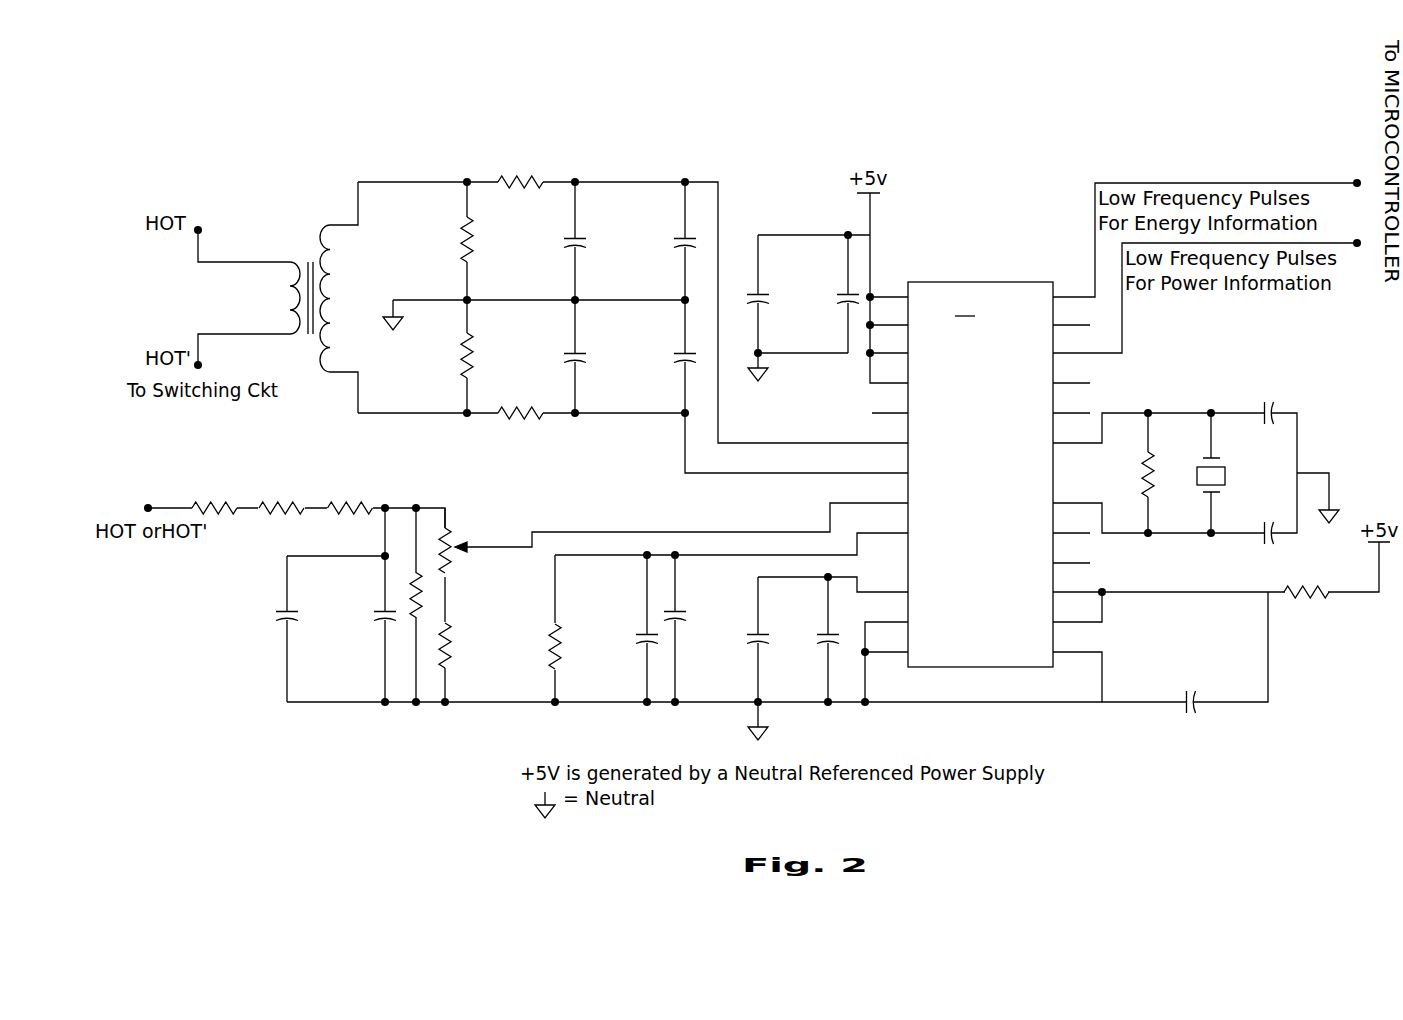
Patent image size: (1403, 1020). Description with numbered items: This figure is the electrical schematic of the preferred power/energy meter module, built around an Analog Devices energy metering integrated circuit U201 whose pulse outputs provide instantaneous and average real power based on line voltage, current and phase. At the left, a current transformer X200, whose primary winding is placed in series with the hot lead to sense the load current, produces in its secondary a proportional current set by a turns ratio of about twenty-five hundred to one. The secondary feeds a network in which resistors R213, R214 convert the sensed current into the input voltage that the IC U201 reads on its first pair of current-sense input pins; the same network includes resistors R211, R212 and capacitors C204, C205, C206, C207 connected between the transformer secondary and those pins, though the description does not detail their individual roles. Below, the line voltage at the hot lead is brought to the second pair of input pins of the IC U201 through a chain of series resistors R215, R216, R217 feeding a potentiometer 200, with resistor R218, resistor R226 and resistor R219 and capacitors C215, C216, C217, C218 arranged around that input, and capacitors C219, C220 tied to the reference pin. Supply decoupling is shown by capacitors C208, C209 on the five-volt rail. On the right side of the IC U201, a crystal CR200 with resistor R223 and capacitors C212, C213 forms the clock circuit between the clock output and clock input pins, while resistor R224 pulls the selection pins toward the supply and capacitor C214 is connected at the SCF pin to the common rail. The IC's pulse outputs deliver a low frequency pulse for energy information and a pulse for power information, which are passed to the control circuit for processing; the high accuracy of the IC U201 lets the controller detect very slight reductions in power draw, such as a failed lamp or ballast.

The current transformer CT 2500:1 X200 is at (276, 297).
The 10 Ohm burden resistor R211 is at (428, 241).
The 10 Ohm burden resistor R212 is at (428, 356).
The resistor R213 is at (519, 156).
The resistor R214 is at (519, 435).
The 0.01uF capacitor C204 is at (543, 241).
The 0.22uF capacitor C205 is at (651, 241).
The 0.01uF capacitor C206 is at (543, 356).
The 0.22uF capacitor C207 is at (651, 356).
The 10uF supply capacitor C208 is at (780, 294).
The 0.1uF supply capacitor C209 is at (824, 294).
The energy metering integrated circuit U201 is at (981, 437).
The 1M resistor R215 is at (212, 483).
The 1M resistor R216 is at (279, 483).
The 137K resistor R217 is at (350, 483).
The 10K potentiometer 200 is at (465, 590).
The 2.94K resistor R218 is at (480, 599).
The 1K resistor R219 is at (527, 628).
The 1K resistor R226 is at (419, 632).
The 0.22uF capacitor C215 is at (256, 629).
The 0.01uF capacitor C216 is at (355, 629).
The 0.01uF capacitor C217 is at (616, 628).
The 0.22uF capacitor C218 is at (704, 628).
The 10uF capacitor C219 is at (736, 639).
The 0.1uF capacitor C220 is at (806, 639).
The 10K resistor R223 is at (1120, 473).
The 2.573MHz crystal CR200 is at (1231, 473).
The 72pF capacitor C212 is at (1268, 387).
The 22pF capacitor C213 is at (1242, 554).
The 10K pull-up resistor R224 is at (1311, 621).
The 0.01uF capacitor C214 is at (1191, 676).